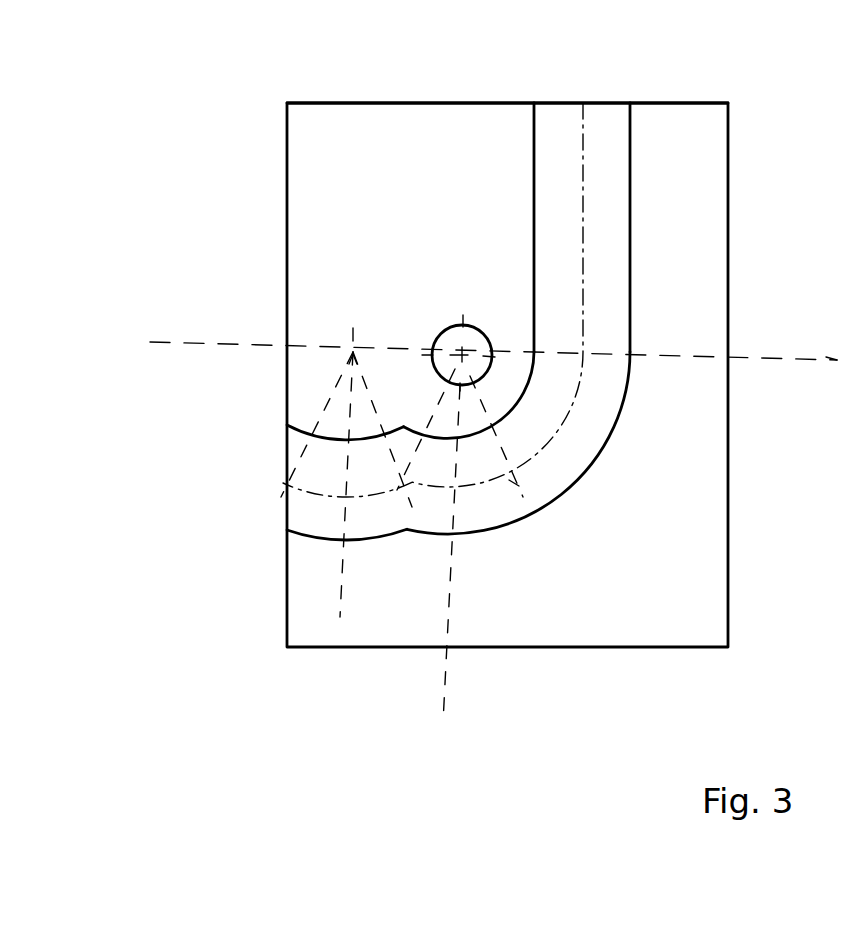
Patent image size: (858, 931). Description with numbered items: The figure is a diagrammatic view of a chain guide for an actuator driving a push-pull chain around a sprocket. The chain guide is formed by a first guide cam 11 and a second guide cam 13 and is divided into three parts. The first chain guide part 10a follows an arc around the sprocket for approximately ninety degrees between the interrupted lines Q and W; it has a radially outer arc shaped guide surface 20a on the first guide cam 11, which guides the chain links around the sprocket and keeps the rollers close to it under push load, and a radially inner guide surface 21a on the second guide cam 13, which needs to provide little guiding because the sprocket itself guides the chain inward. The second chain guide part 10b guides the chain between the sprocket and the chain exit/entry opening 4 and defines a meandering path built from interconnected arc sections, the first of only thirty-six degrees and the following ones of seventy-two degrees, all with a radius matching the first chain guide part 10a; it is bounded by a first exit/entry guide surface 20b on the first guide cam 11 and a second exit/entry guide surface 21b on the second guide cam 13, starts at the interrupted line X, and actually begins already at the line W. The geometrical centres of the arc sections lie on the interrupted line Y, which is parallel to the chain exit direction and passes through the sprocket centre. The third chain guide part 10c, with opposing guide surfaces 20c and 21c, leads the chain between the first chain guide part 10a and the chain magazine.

The chain exit/entry opening 4 is at (284, 500).
The first chain guide part 10a is at (631, 385).
The second chain guide part 10b is at (276, 544).
The third chain guide part 10c is at (676, 183).
The first guide cam 11 is at (690, 608).
The second guide cam 13 is at (325, 103).
The radially outer arc shaped guide surface 20a is at (563, 492).
The first exit/entry guide surface 20b is at (315, 537).
The guide surface 20c is at (633, 182).
The radially inner guide surface 21a is at (525, 383).
The second exit/entry guide surface 21b is at (317, 435).
The guide surface 21c is at (534, 197).
The interrupted line X is at (445, 680).
The interrupted line Y is at (185, 343).
The interrupted line Q is at (800, 360).
The interrupted line W is at (513, 483).